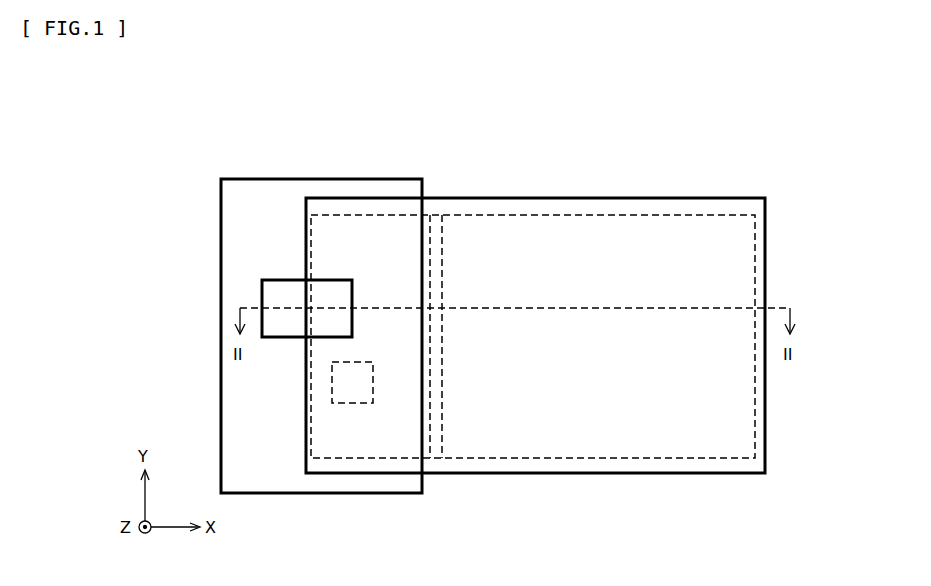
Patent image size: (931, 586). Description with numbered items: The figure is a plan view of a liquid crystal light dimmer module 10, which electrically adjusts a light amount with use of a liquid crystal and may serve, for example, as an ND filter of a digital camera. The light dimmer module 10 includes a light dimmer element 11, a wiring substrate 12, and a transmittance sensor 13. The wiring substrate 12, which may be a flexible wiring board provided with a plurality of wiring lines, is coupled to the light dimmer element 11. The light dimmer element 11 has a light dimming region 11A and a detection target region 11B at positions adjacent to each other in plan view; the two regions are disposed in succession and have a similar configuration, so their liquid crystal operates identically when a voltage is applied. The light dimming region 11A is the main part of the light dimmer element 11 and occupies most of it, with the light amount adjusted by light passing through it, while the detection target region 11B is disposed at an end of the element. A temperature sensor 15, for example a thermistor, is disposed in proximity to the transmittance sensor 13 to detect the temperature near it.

The light dimmer module 10 is at (634, 142).
The light dimmer element 11 is at (583, 198).
The light dimming region 11A is at (483, 234).
The detection target region 11B is at (383, 234).
The wiring substrate 12 is at (275, 489).
The transmittance sensor 13 is at (283, 298).
The temperature sensor 15 is at (352, 390).